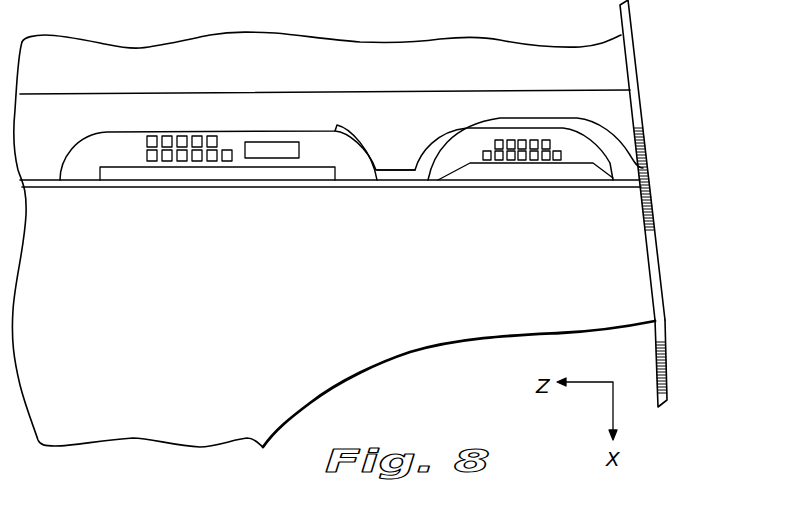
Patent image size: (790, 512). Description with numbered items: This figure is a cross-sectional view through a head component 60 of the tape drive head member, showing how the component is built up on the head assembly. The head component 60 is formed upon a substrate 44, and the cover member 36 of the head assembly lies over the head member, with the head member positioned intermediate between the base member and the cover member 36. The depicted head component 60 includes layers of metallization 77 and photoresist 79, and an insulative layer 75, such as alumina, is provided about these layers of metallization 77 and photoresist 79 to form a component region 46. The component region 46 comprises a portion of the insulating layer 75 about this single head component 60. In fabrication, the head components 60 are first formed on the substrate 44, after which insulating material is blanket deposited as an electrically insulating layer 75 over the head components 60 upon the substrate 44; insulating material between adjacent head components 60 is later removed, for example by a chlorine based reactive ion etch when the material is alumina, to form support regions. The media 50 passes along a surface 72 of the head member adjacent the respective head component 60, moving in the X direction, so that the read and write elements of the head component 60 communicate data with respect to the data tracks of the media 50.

The cover member 36 is at (276, 72).
The substrate 44 is at (206, 323).
The component region 46 is at (655, 143).
The media 50 is at (633, 72).
The head component 60 is at (538, 201).
The surface 72 is at (656, 268).
The insulative layer 75 is at (412, 132).
The layers of metallization 77 is at (456, 152).
The photoresist 79 is at (102, 150).